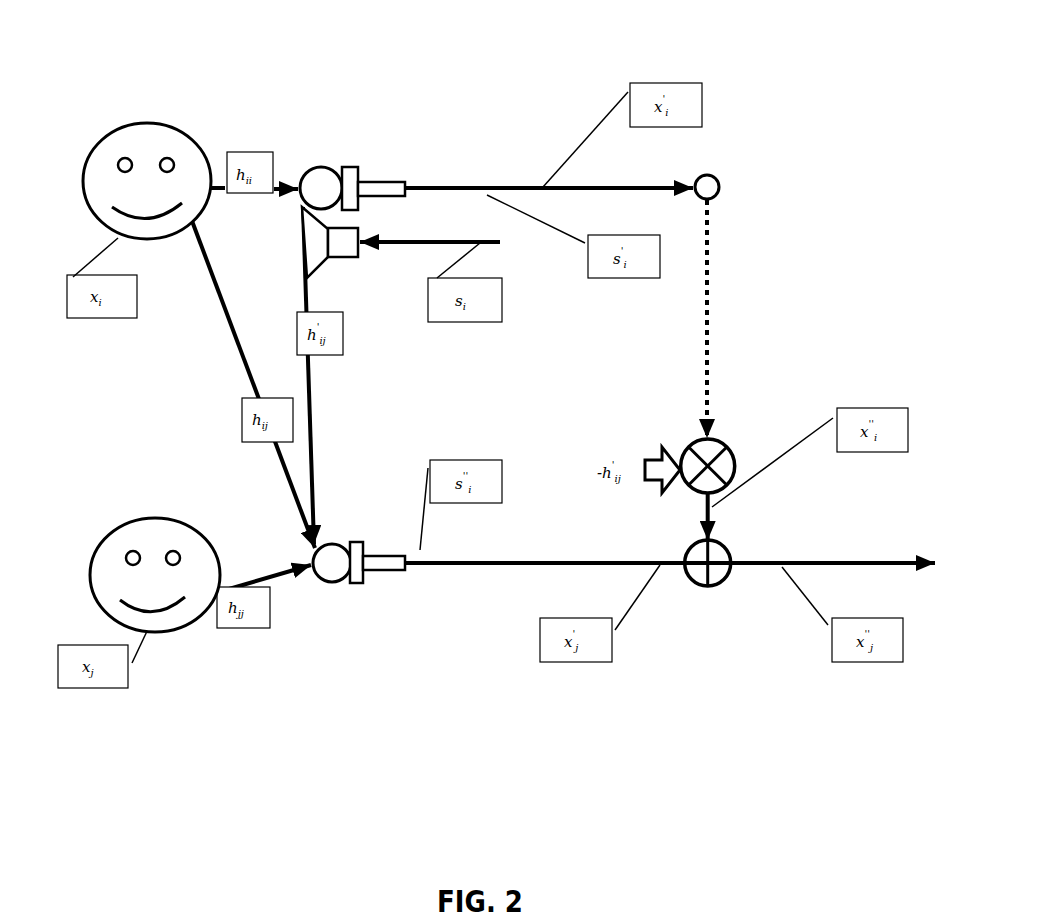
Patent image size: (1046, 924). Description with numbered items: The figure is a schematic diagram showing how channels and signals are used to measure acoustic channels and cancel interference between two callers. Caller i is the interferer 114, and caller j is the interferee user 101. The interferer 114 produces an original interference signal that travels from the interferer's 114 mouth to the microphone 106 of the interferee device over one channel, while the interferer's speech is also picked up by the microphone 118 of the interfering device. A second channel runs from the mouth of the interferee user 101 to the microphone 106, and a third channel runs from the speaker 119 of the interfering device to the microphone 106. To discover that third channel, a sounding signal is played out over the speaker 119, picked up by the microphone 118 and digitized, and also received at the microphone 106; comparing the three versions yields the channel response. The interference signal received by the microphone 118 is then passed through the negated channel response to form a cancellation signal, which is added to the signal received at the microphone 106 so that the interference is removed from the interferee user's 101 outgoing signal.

The interferer 114 is at (134, 123).
The microphone of the interfering device 118 is at (323, 167).
The speaker of the interfering device 119 is at (356, 257).
The interferee user 101 is at (183, 630).
The microphone of the interferee device 106 is at (333, 583).